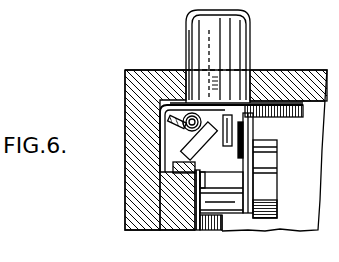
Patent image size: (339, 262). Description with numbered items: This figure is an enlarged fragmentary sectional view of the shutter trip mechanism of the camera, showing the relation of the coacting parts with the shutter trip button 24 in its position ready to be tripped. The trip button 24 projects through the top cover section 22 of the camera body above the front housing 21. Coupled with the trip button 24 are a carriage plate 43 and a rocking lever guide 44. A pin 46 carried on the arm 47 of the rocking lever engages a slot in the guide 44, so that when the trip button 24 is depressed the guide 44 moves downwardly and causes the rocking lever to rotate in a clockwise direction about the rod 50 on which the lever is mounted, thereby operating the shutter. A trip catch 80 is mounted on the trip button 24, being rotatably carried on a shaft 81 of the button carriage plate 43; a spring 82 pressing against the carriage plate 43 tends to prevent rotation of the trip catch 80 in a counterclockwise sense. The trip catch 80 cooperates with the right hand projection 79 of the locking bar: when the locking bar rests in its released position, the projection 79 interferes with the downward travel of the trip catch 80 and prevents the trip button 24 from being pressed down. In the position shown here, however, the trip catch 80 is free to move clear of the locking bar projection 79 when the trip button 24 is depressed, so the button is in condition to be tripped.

The front housing 21 is at (123, 204).
The top cover section 22 is at (310, 63).
The trip button 24 is at (251, 39).
The carriage plate 43 is at (166, 148).
The rocking lever guide 44 is at (240, 147).
The pin 46 is at (198, 167).
The arm of rocking lever 47 is at (254, 162).
The rod 50 is at (236, 215).
The right hand projection of locking bar 79 is at (175, 168).
The trip catch 80 is at (173, 126).
The shaft 81 is at (221, 159).
The spring 82 is at (176, 112).